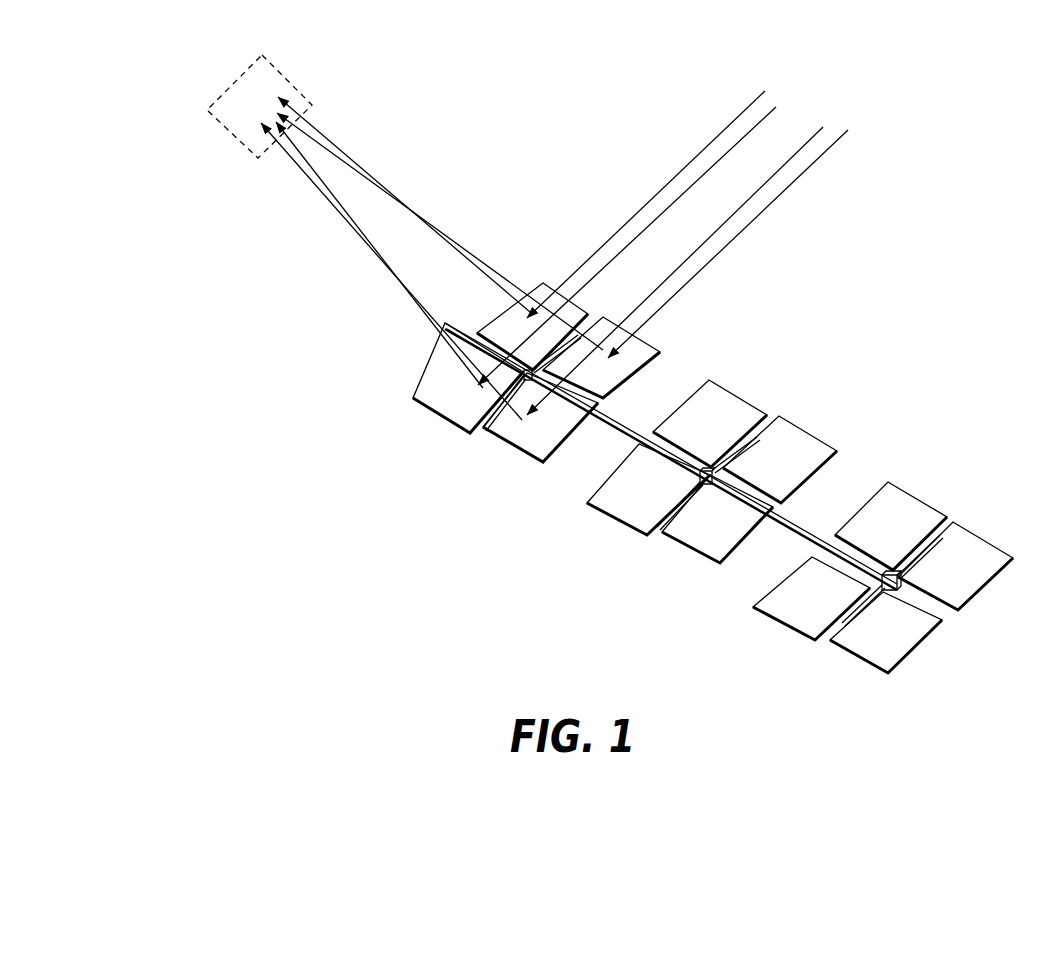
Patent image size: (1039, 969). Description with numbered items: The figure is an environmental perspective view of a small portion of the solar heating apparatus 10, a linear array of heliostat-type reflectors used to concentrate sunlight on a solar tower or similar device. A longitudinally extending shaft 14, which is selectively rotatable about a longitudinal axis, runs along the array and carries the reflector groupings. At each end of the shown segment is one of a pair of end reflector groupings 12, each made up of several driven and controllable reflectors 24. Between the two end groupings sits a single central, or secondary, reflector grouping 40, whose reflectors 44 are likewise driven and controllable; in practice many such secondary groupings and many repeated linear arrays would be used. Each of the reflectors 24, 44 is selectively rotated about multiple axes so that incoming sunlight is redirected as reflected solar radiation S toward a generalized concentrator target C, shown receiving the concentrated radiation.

The solar heating apparatus 10 is at (693, 479).
The end reflector grouping 12 is at (693, 479).
The longitudinally extending shaft 14 is at (620, 420).
The reflector 24 is at (538, 290).
The secondary reflector grouping 40 is at (712, 484).
The reflector 44 is at (723, 405).
The concentrator target C is at (242, 66).
The reflected solar radiation S is at (554, 255).